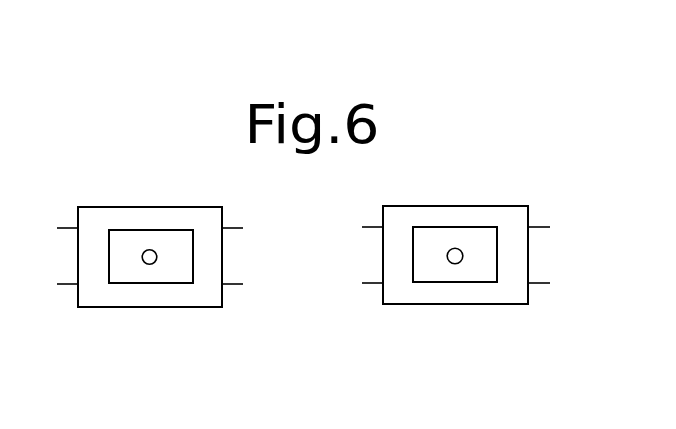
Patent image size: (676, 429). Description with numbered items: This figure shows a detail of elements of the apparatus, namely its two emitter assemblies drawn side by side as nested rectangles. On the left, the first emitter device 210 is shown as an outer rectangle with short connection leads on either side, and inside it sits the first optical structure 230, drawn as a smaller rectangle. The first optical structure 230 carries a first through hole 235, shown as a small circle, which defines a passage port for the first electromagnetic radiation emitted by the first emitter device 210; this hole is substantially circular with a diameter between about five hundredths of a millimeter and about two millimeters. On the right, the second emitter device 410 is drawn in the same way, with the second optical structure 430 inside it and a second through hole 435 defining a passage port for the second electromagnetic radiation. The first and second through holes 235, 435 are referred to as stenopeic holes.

The first emitter device 210 is at (132, 217).
The first optical structure 230 is at (126, 270).
The first through hole 235 is at (152, 262).
The second emitter device 410 is at (504, 217).
The second optical structure 430 is at (428, 270).
The second through hole 435 is at (457, 264).